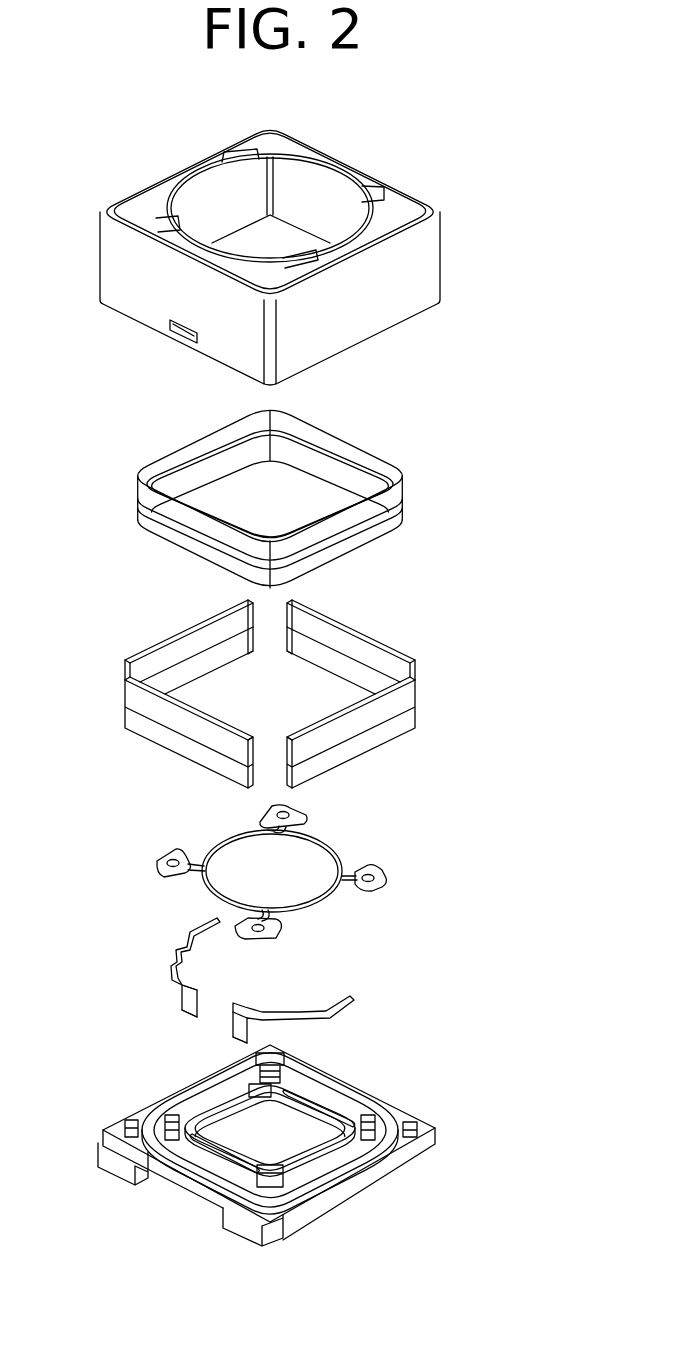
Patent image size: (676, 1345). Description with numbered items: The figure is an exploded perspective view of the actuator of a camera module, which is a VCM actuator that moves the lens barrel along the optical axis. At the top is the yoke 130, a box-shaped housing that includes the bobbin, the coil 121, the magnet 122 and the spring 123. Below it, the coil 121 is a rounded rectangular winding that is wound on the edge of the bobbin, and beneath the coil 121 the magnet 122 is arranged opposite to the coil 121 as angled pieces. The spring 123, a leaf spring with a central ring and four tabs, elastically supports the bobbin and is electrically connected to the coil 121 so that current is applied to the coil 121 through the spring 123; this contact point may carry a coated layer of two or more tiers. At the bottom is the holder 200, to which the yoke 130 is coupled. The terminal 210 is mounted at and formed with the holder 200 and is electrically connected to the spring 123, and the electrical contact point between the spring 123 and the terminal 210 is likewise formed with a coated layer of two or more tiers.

The yoke 130 is at (437, 258).
The coil 121 is at (398, 493).
The magnet 122 is at (406, 698).
The spring 123 is at (380, 878).
The terminal 210 is at (185, 952).
The holder 200 is at (437, 1138).